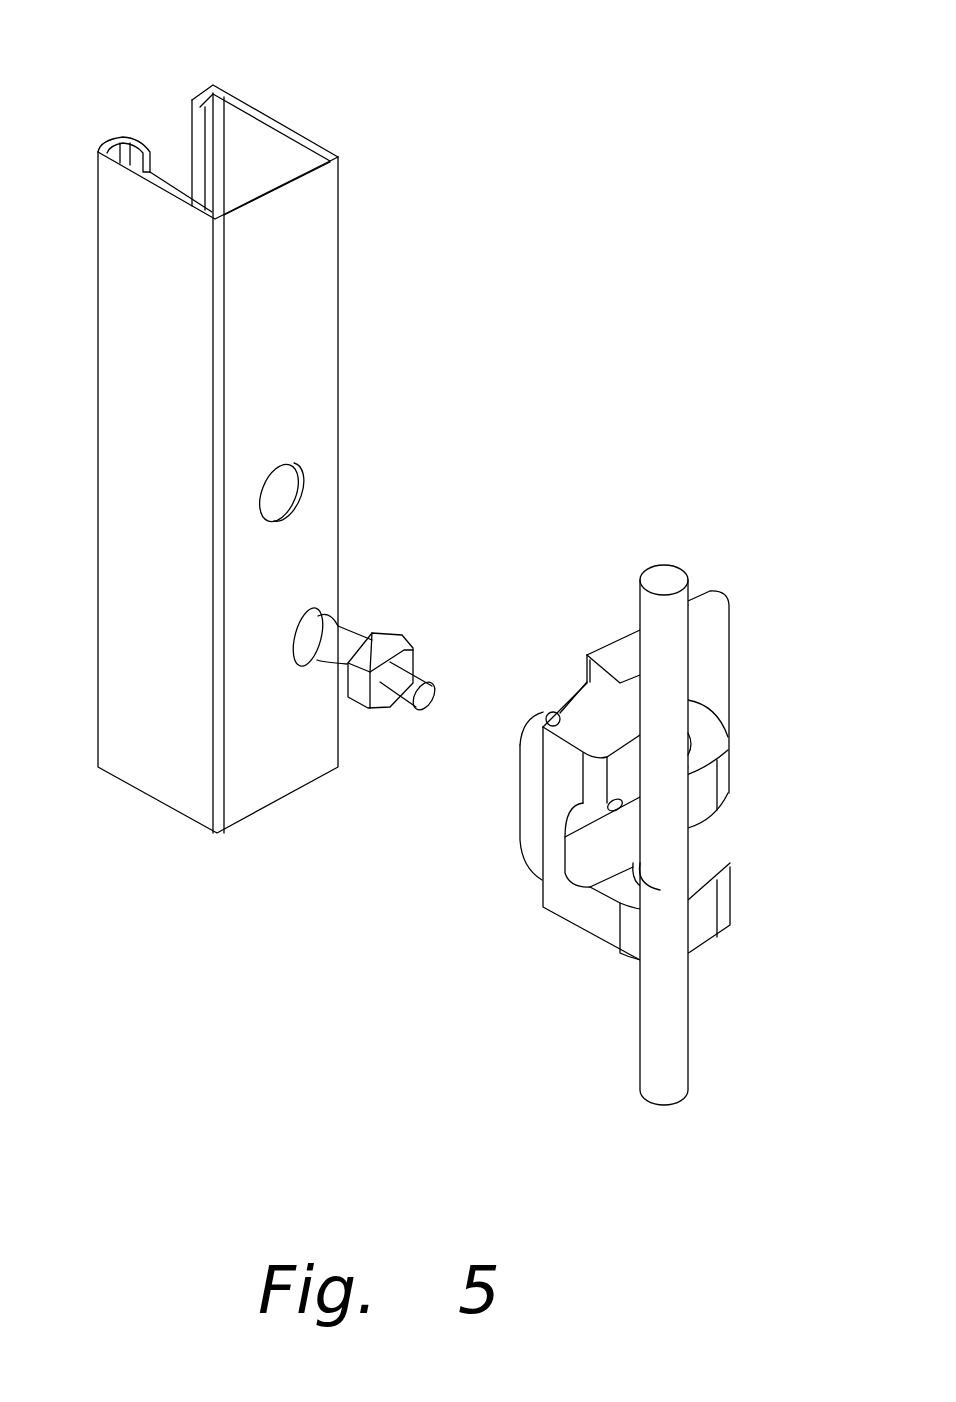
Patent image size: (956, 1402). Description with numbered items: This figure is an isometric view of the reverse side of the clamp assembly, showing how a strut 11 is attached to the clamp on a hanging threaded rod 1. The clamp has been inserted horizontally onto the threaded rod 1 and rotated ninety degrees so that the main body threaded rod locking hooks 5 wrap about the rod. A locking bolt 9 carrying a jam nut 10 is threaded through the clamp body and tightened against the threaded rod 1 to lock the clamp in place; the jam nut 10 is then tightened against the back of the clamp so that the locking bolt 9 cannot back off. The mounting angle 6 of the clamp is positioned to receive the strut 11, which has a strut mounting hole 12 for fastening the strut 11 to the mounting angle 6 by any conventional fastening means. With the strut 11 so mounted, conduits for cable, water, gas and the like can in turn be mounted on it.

The threaded rod 1 is at (633, 1080).
The main body threaded rod locking hooks 5 is at (610, 920).
The mounting angle 6 is at (723, 593).
The locking bolt 9 is at (438, 680).
The jam nut 10 is at (398, 633).
The strut 11 is at (305, 127).
The strut mounting hole 12 is at (297, 463).